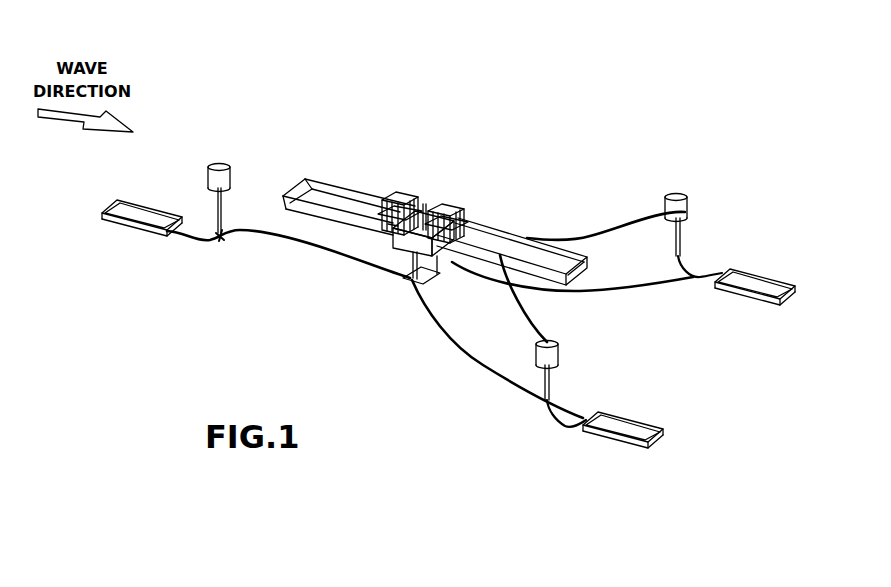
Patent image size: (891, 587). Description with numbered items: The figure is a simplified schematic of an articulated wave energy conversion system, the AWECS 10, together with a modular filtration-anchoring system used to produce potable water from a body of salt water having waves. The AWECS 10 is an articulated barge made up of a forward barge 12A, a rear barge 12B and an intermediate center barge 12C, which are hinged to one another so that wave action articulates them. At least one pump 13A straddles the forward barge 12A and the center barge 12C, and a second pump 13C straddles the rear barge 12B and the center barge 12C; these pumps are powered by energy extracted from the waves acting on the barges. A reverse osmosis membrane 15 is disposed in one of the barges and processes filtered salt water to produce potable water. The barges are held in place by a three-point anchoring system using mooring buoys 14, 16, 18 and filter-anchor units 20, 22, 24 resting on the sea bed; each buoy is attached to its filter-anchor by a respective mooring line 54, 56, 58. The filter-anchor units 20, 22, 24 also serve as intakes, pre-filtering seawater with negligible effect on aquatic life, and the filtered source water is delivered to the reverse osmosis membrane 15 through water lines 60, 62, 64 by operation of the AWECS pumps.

The AWECS 10 is at (610, 128).
The forward barge 12A is at (336, 186).
The rear barge 12B is at (506, 227).
The center barge 12C is at (413, 242).
The pump 13A is at (392, 190).
The second clamp bracket 13C is at (446, 205).
The mooring buoy 14 is at (680, 194).
The reverse osmosis membrane 15 is at (393, 230).
The mooring buoy 16 is at (557, 343).
The mooring buoy 18 is at (230, 168).
The filter-anchor unit 20 is at (795, 278).
The filter-anchor unit 22 is at (662, 420).
The filter-anchor unit 24 is at (163, 236).
The mooring line 54 is at (683, 236).
The mooring line 56 is at (557, 427).
The mooring line 58 is at (213, 208).
The water line 60 is at (603, 290).
The water line 62 is at (488, 370).
The water line 64 is at (285, 240).